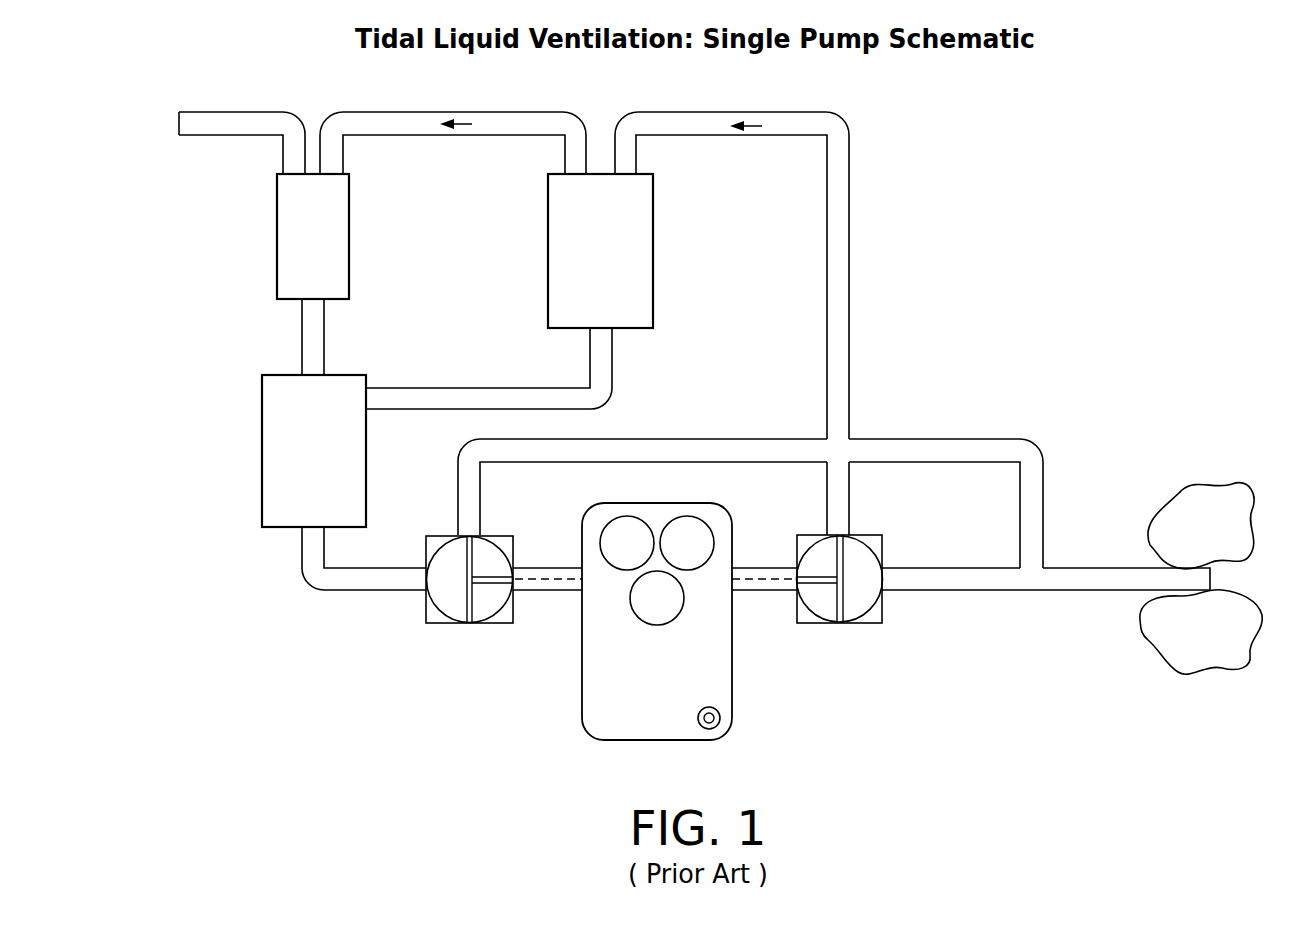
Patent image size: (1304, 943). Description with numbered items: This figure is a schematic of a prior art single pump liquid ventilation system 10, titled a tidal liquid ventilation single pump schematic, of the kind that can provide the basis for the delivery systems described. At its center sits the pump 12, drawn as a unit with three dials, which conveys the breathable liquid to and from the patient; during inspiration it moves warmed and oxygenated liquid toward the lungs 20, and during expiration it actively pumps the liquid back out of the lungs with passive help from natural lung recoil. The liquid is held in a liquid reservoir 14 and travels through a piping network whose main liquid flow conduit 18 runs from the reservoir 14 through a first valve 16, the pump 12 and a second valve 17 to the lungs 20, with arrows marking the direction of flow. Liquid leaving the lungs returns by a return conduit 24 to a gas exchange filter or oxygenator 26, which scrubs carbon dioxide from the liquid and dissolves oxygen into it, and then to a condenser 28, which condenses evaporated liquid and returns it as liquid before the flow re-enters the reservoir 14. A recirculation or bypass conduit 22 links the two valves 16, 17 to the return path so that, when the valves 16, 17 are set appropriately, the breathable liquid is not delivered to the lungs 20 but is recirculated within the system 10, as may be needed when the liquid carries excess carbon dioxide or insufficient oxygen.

The tidal liquid ventilation system 10 is at (877, 201).
The pump 12 is at (643, 688).
The reservoir 14 is at (300, 461).
The valve 16 is at (437, 623).
The valve 17 is at (875, 623).
The liquid flow conduit 18 is at (443, 399).
The lungs 20 is at (1193, 536).
The bypass conduit 22 is at (710, 451).
The return conduit 24 is at (838, 520).
The oxygenator 26 is at (586, 264).
The heater/condenser 28 is at (298, 251).